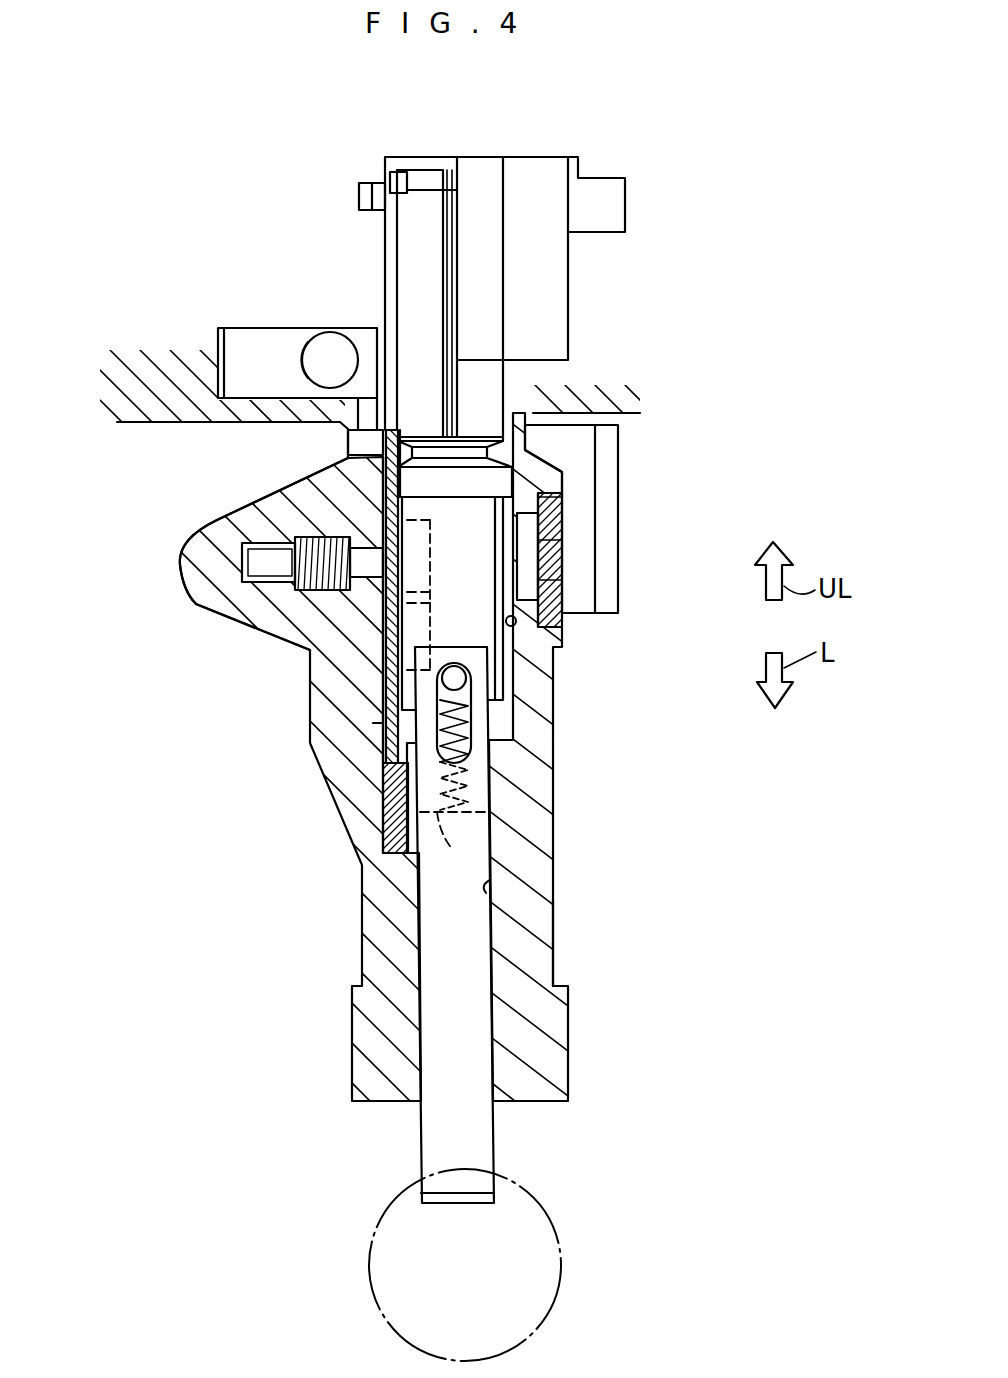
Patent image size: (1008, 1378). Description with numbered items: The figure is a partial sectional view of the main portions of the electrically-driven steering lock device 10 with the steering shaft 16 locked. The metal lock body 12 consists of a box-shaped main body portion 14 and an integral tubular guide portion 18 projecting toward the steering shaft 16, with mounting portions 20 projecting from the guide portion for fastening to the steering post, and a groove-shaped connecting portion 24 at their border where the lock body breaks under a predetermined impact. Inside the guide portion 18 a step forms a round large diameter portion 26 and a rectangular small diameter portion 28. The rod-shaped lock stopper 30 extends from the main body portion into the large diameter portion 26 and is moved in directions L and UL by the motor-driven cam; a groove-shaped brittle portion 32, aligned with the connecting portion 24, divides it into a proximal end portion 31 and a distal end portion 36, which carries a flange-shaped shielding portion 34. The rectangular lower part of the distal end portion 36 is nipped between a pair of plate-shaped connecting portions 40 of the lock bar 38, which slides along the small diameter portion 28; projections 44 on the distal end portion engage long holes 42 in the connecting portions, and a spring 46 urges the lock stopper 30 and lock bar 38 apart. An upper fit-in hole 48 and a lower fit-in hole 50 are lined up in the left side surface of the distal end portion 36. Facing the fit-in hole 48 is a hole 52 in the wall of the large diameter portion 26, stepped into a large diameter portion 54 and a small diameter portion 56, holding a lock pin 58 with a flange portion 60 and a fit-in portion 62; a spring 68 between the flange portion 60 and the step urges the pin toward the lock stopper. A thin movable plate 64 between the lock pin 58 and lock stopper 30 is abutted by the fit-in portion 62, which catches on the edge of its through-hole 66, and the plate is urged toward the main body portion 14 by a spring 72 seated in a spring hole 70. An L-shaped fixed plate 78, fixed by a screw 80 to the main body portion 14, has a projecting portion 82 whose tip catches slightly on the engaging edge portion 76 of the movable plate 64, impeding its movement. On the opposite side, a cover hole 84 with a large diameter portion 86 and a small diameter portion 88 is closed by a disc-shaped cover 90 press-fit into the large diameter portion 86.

The electrically-driven steering lock device 10 is at (670, 292).
The lock body 12 is at (553, 768).
The main body portion 14 is at (122, 423).
The steering shaft 16 is at (562, 1268).
The guide portion 18 is at (555, 934).
The mounting portions 20 is at (600, 472).
The connecting portion 24 is at (352, 434).
The large diameter portion 26 is at (517, 626).
The small diameter portion 28 is at (490, 888).
The lock stopper 30 is at (570, 308).
The proximal end portion 31 is at (385, 228).
The brittle portion 32 is at (480, 455).
The shielding portion 34 is at (597, 432).
The distal end portion 36 is at (452, 603).
The lock bar 38 is at (420, 1115).
The connecting portions 40 is at (490, 724).
The long holes 42 is at (383, 748).
The projections 44 is at (467, 680).
The spring 46 is at (454, 789).
The fit-in hole 48 is at (430, 530).
The fit-in hole 50 is at (430, 620).
The hole 52 is at (240, 620).
The large diameter portion 54 is at (310, 648).
The small diameter portion 56 is at (285, 540).
The lock pin 58 is at (250, 547).
The flange portion 60 is at (365, 555).
The fit-in portion 62 is at (320, 482).
The movable plate 64 is at (383, 787).
The through-hole 66 is at (385, 690).
The spring 68 is at (297, 620).
The spring hole 70 is at (390, 820).
The spring 72 is at (385, 840).
The engaging edge portion 76 is at (400, 433).
The fixed plate 78 is at (218, 352).
The screw 80 is at (330, 356).
The projecting portion 82 is at (370, 408).
The cover hole 84 is at (564, 614).
The large diameter portion 86 is at (560, 499).
The small diameter portion 88 is at (548, 581).
The cover 90 is at (560, 541).